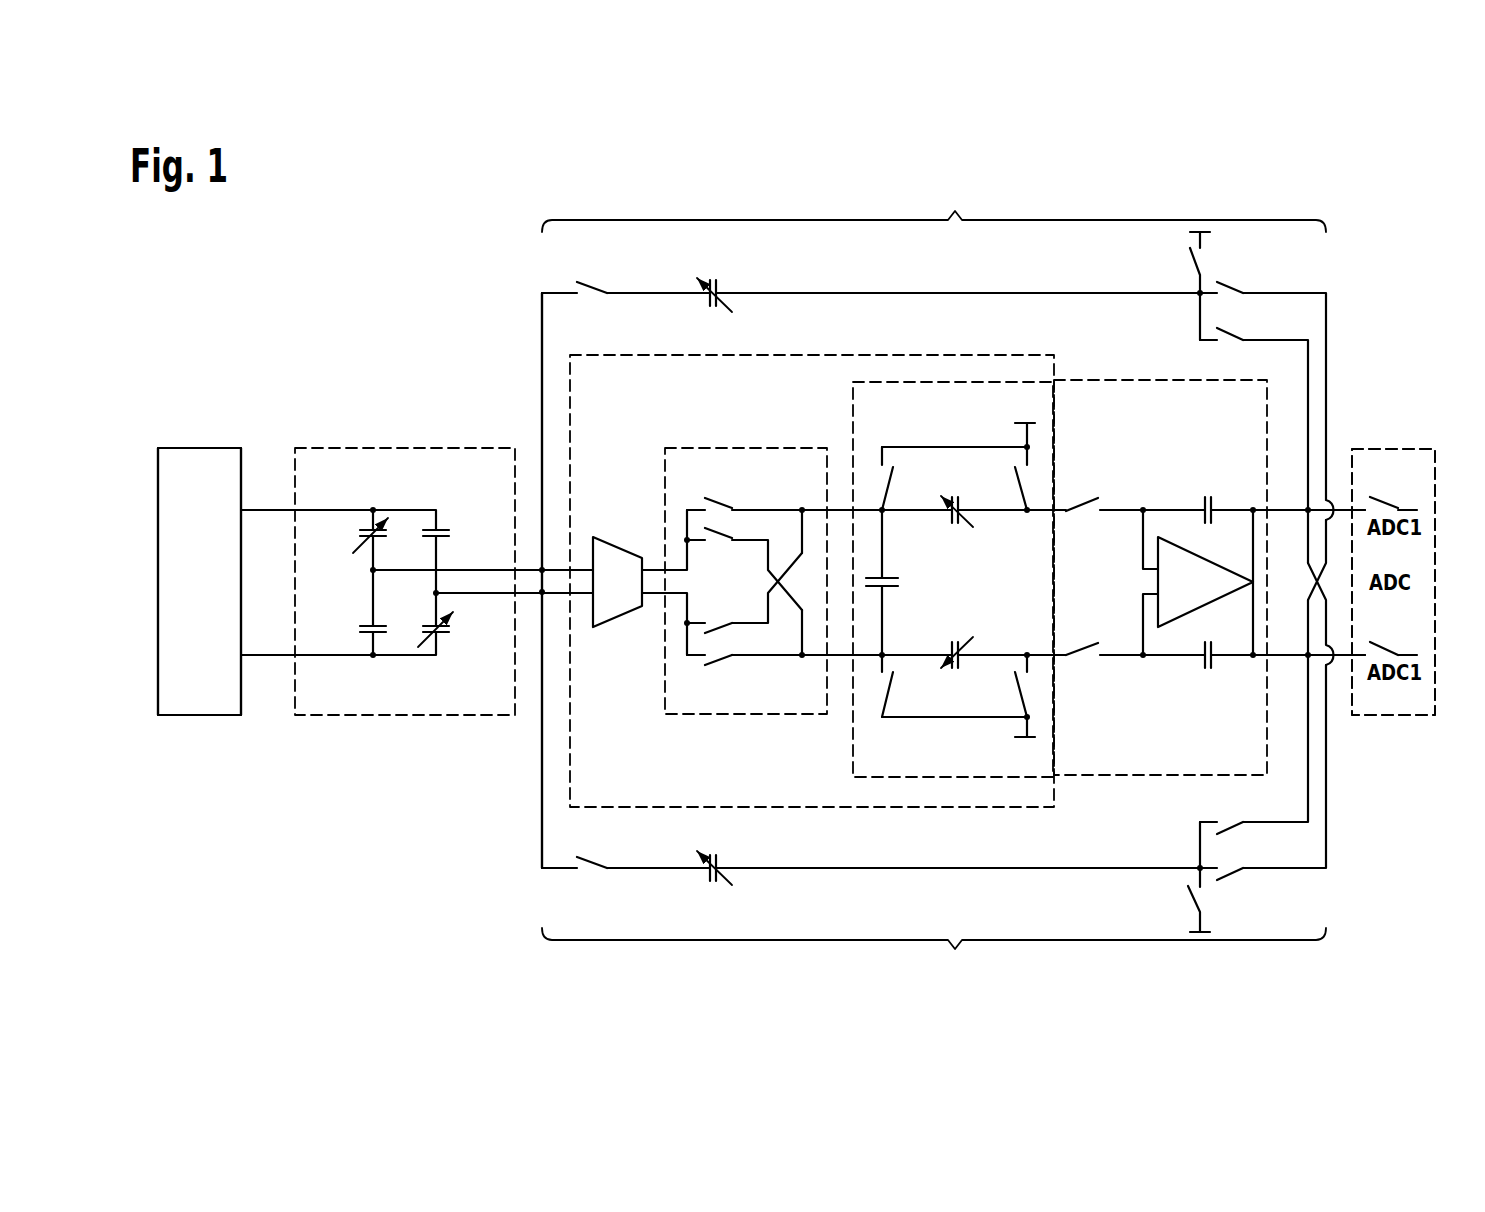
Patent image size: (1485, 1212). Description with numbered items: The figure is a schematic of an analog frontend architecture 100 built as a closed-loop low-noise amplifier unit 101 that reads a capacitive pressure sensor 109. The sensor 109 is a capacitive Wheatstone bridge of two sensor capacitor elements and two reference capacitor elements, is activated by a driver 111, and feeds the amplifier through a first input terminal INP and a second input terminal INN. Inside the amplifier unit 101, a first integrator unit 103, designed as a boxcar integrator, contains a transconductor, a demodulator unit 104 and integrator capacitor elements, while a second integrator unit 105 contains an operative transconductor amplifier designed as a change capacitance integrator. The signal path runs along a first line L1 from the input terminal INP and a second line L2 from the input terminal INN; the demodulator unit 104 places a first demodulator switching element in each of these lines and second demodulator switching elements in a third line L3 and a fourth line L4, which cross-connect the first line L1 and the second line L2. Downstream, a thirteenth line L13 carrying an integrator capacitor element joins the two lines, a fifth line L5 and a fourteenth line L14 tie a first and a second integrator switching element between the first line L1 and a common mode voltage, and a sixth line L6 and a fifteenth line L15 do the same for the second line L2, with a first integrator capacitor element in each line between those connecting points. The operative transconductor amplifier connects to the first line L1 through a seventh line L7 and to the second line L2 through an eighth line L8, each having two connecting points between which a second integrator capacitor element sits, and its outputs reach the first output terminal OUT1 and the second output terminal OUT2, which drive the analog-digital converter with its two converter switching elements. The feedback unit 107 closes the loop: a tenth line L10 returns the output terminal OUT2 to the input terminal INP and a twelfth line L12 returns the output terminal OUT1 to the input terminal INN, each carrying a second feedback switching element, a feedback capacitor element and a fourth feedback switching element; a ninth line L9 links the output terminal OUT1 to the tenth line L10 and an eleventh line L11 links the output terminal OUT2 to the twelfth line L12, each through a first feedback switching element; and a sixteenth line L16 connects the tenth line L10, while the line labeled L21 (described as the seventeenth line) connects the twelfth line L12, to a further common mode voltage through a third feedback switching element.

The analog frontend architecture 100 is at (450, 230).
The low-noise amplifier unit 101 is at (450, 884).
The first integrator unit 103 is at (713, 807).
The demodulator unit 104 is at (713, 448).
The second integrator unit 105 is at (1177, 380).
The feedback unit 107 is at (934, 582).
The capacitive pressure sensor 109 is at (383, 448).
The driver 111 is at (236, 437).
The first line L1 is at (580, 567).
The second line L2 is at (580, 597).
The third line L3 is at (690, 537).
The fourth line L4 is at (790, 556).
The fifth line L5 is at (961, 445).
The sixth line L6 is at (960, 718).
The seventh line L7 is at (1145, 512).
The eighth line L8 is at (1145, 656).
The ninth line L9 is at (1198, 308).
The tenth line L10 is at (542, 383).
The eleventh line L11 is at (1198, 846).
The twelfth line L12 is at (542, 778).
The thirteenth line L13 is at (879, 526).
The fourteenth line L14 is at (882, 503).
The fifteenth line L15 is at (881, 660).
The sixteenth line L16 is at (1198, 278).
The twenty-first line L21 is at (1198, 922).
The first input terminal INP is at (541, 568).
The second input terminal INN is at (541, 594).
The first output terminal OUT1 is at (1310, 505).
The second output terminal OUT2 is at (1310, 660).